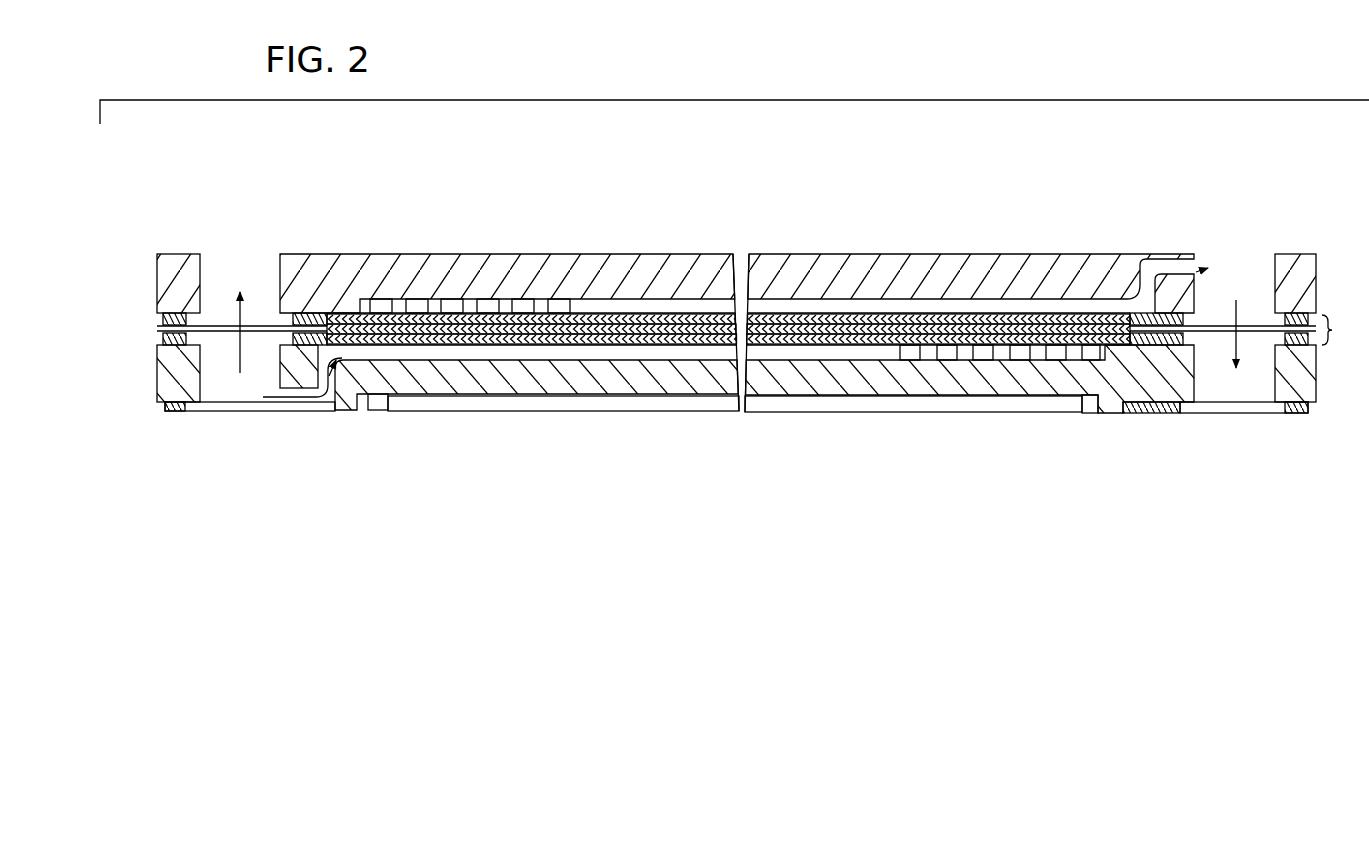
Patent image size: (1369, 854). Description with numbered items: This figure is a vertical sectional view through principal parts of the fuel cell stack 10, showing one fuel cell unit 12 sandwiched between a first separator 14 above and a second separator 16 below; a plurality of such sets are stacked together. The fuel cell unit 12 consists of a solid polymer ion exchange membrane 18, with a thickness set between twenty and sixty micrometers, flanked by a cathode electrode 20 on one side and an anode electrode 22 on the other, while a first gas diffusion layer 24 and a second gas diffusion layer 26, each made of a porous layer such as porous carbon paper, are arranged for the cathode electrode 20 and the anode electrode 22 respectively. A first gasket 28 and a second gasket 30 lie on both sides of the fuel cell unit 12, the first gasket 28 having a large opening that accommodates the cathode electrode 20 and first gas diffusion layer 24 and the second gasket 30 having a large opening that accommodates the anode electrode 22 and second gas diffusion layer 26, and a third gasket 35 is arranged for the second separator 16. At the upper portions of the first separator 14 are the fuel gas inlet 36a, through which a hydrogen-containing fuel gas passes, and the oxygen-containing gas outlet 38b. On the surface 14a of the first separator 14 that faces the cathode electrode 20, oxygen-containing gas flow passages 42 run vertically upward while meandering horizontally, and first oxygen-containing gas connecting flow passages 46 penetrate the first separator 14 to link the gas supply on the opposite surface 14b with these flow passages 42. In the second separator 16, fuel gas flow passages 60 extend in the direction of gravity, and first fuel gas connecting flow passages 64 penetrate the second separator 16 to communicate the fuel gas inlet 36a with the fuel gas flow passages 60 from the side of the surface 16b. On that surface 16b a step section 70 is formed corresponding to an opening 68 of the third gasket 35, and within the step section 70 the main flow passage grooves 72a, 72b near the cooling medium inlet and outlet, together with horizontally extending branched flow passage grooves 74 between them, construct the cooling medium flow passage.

The fuel cell stack 10 is at (902, 167).
The fuel cell unit 12 is at (1368, 342).
The first separator 14 is at (921, 252).
The surface of the first separator 14a is at (473, 341).
The surface of the first separator 14b is at (855, 254).
The second separator 16 is at (883, 415).
The surface of the second separator 16b is at (360, 412).
The solid polymer ion exchange membrane 18 is at (160, 329).
The cathode electrode 20 is at (397, 326).
The anode electrode 22 is at (676, 336).
The first gas diffusion layer 24 is at (354, 298).
The second gas diffusion layer 26 is at (632, 345).
The first gasket 28 is at (167, 306).
The second gasket 30 is at (170, 350).
The third gasket 35 is at (177, 416).
The fuel gas inlet 36a is at (245, 262).
The oxygen-containing gas outlet 38b is at (1250, 397).
The oxygen-containing gas flow passages 42 is at (788, 307).
The first oxygen-containing gas connecting flow passages 46 is at (1155, 254).
The fuel gas flow passages 60 is at (571, 356).
The first fuel gas connecting flow passages 64 is at (303, 402).
The opening of the third gasket 68 is at (1125, 413).
The step section 70 is at (1109, 413).
The main flow passage groove 72a is at (390, 405).
The main flow passage groove 72b is at (1088, 413).
The branched flow passage grooves 74 is at (720, 410).